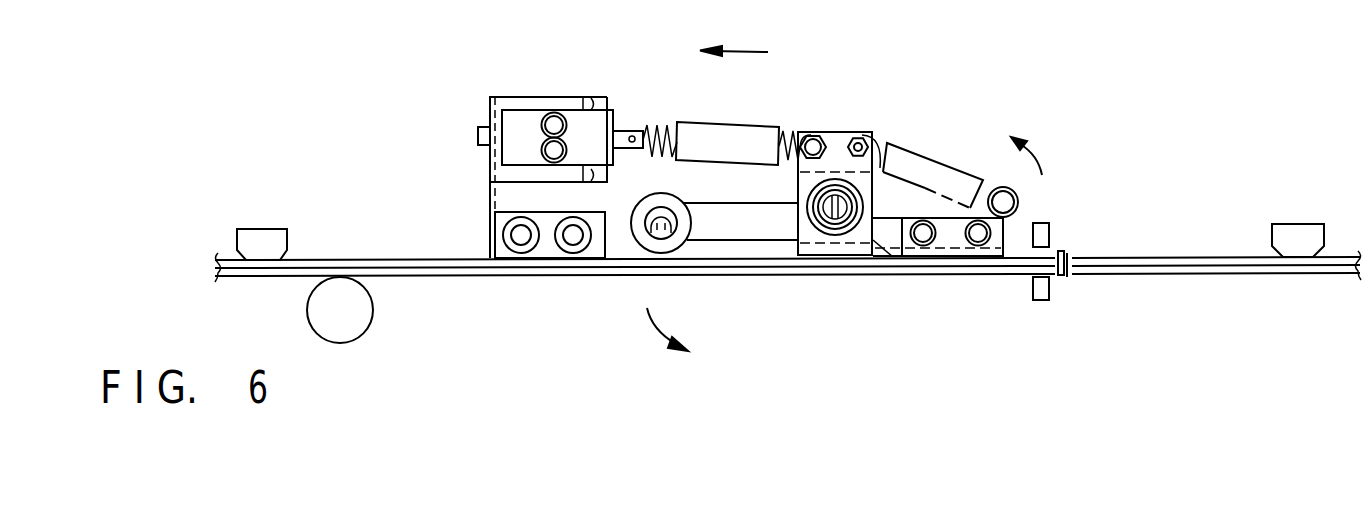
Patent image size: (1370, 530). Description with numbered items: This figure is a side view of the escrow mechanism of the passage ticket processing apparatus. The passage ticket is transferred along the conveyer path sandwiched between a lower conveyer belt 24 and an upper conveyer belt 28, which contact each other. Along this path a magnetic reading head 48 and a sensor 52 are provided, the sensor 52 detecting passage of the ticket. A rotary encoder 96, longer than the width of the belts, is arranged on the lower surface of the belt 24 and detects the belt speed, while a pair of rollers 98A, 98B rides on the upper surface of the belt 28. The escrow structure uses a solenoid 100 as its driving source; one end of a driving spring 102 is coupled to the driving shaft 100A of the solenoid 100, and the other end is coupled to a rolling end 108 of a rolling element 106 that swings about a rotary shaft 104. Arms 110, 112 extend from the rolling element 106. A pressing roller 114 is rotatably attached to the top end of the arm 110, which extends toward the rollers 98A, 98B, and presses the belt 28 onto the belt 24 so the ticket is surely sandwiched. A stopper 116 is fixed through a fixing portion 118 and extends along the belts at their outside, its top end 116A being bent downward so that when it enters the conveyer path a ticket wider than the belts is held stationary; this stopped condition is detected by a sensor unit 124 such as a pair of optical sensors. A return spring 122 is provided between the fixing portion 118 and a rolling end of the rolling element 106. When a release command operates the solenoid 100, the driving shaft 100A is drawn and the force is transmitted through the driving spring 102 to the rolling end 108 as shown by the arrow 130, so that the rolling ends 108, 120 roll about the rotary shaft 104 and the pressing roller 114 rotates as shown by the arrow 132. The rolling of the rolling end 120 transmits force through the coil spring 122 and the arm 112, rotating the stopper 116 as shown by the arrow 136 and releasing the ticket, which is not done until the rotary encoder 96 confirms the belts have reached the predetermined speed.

The conveyer belt 24 is at (1201, 273).
The conveyer belt 28 is at (1212, 257).
The magnetic reading head 48 is at (262, 230).
The sensor 52 is at (1299, 227).
The rotary encoder 96 is at (373, 311).
The roller 98A is at (521, 255).
The roller 98B is at (574, 255).
The solenoid 100 is at (520, 112).
The driving shaft 100A is at (622, 127).
The driving spring 102 is at (721, 132).
The rotary shaft 104 is at (835, 230).
The rolling element 106 is at (845, 108).
The rolling end 108 is at (808, 135).
The arm 110 is at (739, 216).
The arm 112 is at (895, 240).
The pressing roller 114 is at (661, 252).
The stopper 116 is at (1062, 251).
The top end 116A is at (1068, 278).
The fixing portion 118 is at (955, 240).
The rolling end 120 is at (859, 134).
The return spring 122 is at (936, 165).
The sensor unit 124 is at (1041, 223).
The arrow 130 is at (746, 50).
The arrow 132 is at (660, 332).
The arrow 136 is at (1034, 149).